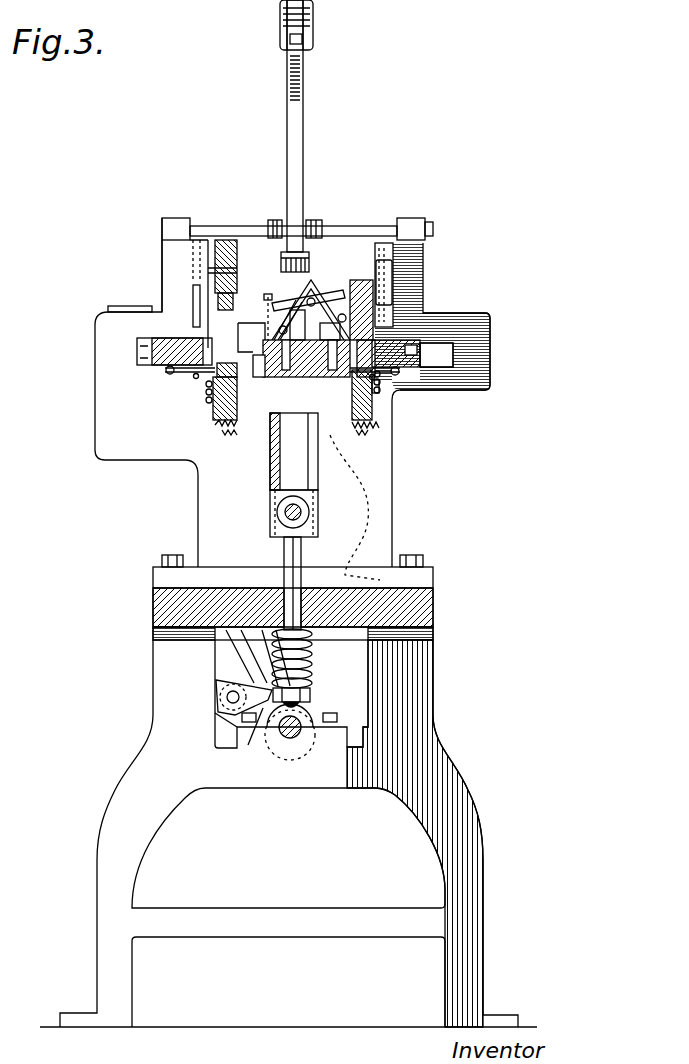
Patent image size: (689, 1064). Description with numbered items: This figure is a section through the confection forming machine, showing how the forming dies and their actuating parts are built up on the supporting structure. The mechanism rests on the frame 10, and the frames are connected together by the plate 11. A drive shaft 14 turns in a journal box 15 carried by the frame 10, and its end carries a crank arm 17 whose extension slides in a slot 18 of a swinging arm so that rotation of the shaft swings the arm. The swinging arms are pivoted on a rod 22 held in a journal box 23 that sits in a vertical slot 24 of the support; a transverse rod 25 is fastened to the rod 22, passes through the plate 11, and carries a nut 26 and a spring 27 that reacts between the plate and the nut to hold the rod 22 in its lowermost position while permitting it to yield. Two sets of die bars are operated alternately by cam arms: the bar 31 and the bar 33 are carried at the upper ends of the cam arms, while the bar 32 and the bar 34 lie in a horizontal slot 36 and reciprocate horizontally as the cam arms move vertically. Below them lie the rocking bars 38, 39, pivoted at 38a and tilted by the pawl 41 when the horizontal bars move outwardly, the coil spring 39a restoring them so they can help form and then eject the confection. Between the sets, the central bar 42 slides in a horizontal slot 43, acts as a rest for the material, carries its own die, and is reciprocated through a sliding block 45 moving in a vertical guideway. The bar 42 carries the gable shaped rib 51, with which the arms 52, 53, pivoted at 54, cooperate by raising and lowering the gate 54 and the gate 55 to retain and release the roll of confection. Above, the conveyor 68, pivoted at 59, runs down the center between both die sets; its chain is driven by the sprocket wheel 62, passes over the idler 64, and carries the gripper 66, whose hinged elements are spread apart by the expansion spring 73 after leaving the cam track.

The frame 10 is at (462, 786).
The plate 11 is at (228, 590).
The drive shaft 14 is at (289, 739).
The journal box 15 is at (317, 708).
The crank arm 17 is at (263, 718).
The slot 18 is at (222, 690).
The rod 22 is at (302, 514).
The journal box 23 is at (318, 527).
The vertical slot 24 is at (294, 451).
The transverse rod 25 is at (301, 582).
The nut 26 is at (312, 692).
The spring 27 is at (312, 644).
The bar 31 is at (243, 252).
The bar 32 is at (168, 340).
The bar 33 is at (377, 268).
The bar 34 is at (417, 342).
The horizontal slot 36 is at (438, 368).
The bar 38 is at (238, 408).
The pivot 38a is at (206, 392).
The bar 39 is at (353, 410).
The coil spring 39a is at (216, 426).
The pawl 41 is at (185, 372).
The bar 42 is at (303, 377).
The horizontal slot 43 is at (255, 377).
The sliding block 45 is at (122, 311).
The gable shaped rib 51 is at (314, 286).
The arm 52 is at (288, 308).
The arm 53 is at (332, 300).
The pivot 54 is at (268, 300).
The movable gate 55 is at (355, 290).
The conveyor pivot 59 is at (342, 228).
The sprocket wheel 62 is at (303, 214).
The idler 64 is at (280, 22).
The gripper 66 is at (272, 290).
The conveyor 68 is at (308, 262).
The expansion spring 73 is at (393, 517).